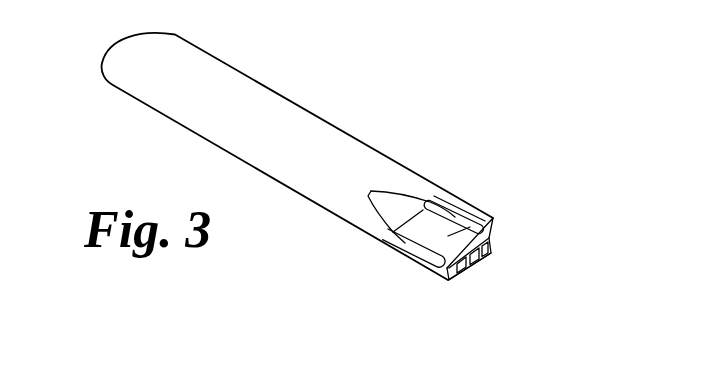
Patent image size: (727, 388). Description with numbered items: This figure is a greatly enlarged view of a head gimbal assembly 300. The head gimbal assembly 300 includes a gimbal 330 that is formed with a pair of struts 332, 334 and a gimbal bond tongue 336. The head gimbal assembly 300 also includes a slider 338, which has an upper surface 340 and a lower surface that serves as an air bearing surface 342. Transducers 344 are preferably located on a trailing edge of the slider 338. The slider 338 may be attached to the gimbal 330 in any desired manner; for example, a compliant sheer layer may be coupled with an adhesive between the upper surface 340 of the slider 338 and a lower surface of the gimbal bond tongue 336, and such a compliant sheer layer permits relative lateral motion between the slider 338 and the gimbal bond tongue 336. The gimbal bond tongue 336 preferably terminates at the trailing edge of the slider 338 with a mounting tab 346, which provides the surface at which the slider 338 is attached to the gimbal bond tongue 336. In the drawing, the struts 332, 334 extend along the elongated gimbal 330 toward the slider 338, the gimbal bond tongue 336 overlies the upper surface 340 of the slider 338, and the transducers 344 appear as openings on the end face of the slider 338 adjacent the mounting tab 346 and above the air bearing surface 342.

The head gimbal assembly 300 is at (351, 76).
The gimbal 330 is at (246, 61).
The strut 332 is at (398, 248).
The strut 334 is at (450, 212).
The gimbal bond tongue 336 is at (491, 219).
The slider 338 is at (474, 278).
The upper surface 340 is at (453, 236).
The air bearing surface 342 is at (440, 280).
The transducers 344 is at (482, 258).
The mounting tab 346 is at (412, 215).